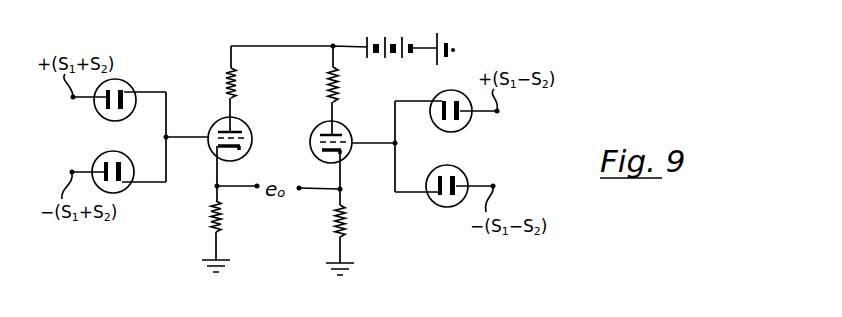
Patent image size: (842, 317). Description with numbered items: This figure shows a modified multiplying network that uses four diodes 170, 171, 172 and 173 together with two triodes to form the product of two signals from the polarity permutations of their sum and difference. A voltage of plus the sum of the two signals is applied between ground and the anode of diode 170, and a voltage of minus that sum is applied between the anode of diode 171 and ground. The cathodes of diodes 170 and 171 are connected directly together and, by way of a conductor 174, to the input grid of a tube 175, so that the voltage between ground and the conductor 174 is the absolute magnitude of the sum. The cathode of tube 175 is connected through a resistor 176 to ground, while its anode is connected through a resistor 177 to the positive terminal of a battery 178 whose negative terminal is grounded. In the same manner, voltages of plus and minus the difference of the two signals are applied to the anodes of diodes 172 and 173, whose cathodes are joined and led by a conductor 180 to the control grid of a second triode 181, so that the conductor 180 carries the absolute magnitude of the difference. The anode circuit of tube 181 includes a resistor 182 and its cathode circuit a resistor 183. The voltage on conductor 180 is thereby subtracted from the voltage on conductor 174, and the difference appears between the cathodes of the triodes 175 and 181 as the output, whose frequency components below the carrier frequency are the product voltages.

The diode 170 is at (118, 120).
The diode 171 is at (97, 155).
The diode 172 is at (446, 132).
The diode 173 is at (465, 172).
The conductor 174 is at (184, 140).
The tube 175 is at (246, 124).
The resistor 176 is at (221, 224).
The resistor 177 is at (236, 78).
The battery 178 is at (378, 36).
The conductor 180 is at (366, 145).
The second triode 181 is at (344, 125).
The resistor 182 is at (338, 78).
The resistor 183 is at (347, 230).